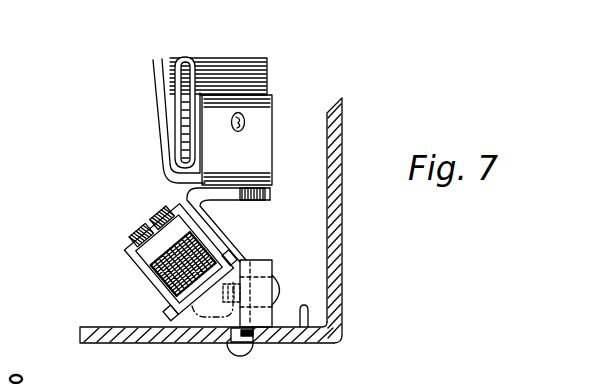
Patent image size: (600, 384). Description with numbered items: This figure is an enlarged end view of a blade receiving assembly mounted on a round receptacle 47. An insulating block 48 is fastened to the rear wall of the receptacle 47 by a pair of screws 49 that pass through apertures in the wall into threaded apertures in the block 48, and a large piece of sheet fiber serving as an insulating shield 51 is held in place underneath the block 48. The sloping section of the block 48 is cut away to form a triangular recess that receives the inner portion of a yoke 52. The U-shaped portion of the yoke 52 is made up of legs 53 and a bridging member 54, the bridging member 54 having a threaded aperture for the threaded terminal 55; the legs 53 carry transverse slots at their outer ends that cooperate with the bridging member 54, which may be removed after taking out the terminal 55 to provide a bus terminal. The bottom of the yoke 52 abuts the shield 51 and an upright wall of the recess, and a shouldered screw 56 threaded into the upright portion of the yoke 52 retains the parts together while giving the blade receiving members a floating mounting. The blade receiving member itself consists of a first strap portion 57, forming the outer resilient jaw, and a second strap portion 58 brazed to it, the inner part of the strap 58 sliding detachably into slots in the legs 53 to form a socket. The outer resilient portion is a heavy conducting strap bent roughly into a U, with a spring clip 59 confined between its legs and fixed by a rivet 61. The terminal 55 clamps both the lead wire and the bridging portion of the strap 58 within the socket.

The round receptacle 47 is at (340, 253).
The insulating block 48 is at (273, 265).
The screws 49 is at (250, 348).
The sheet fiber insulating shield 51 is at (108, 325).
The yoke 52 is at (123, 248).
The legs 53 is at (123, 247).
The bridging member 54 is at (150, 222).
The threaded terminal 55 is at (195, 201).
The screw 56 is at (282, 290).
The first strap portion 57 is at (160, 98).
The second strap portion 58 is at (223, 230).
The spring clip 59 is at (266, 62).
The rivet 61 is at (245, 120).